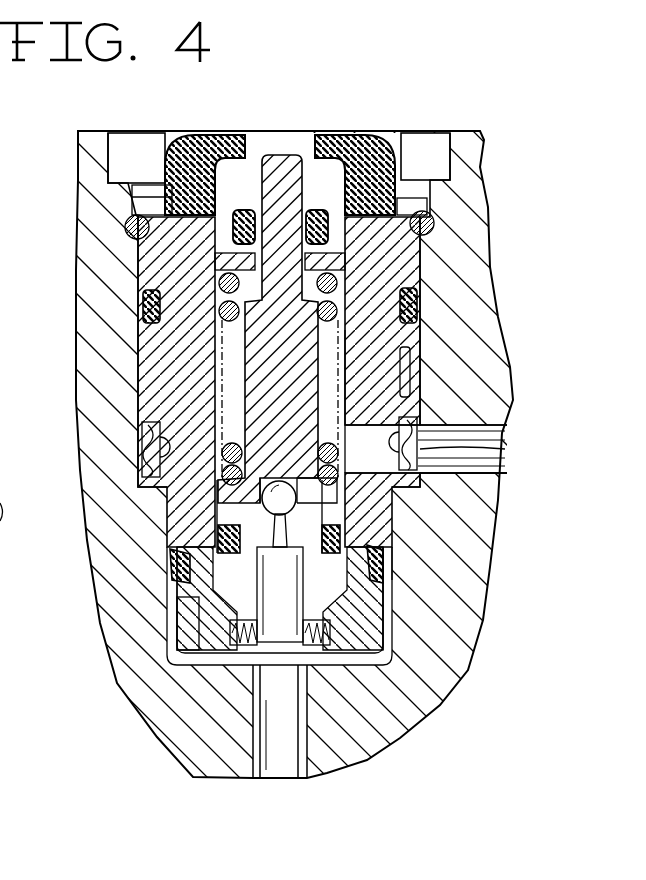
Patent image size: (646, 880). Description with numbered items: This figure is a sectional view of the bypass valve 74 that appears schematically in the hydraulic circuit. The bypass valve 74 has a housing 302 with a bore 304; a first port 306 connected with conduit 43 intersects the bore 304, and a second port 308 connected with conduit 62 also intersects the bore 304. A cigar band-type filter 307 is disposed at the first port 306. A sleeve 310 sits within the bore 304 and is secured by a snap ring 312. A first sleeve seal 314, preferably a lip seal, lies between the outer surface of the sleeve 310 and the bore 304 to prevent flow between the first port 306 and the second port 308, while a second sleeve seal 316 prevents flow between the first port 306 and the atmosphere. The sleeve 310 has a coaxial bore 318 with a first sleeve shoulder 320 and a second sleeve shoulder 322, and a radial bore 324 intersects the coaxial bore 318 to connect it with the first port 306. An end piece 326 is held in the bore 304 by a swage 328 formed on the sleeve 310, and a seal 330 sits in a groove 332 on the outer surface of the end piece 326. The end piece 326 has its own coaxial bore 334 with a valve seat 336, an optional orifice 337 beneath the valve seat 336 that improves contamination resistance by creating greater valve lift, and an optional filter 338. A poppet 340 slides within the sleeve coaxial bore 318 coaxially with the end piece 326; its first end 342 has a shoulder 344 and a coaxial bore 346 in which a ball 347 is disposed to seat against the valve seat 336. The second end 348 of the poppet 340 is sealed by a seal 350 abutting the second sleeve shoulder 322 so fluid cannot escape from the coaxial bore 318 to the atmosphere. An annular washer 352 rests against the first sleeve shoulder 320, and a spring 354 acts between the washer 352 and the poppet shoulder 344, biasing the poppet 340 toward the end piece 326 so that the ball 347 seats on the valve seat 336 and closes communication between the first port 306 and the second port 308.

The bypass valve 74 is at (166, 108).
The housing 302 is at (491, 218).
The bore 304 is at (420, 400).
The first port 306 is at (503, 465).
The cigar band-type filter 307 is at (503, 440).
The second port 308 is at (287, 768).
The sleeve 310 is at (143, 300).
The snap ring 312 is at (128, 220).
The first sleeve seal 314 is at (393, 573).
The second sleeve seal 316 is at (417, 305).
The coaxial bore 318 is at (220, 336).
The first sleeve shoulder 320 is at (138, 238).
The second sleeve shoulder 322 is at (247, 133).
The radial bore 324 is at (412, 388).
The end piece 326 is at (222, 640).
The swage 328 is at (247, 620).
The seal 330 is at (172, 558).
The groove 332 is at (188, 596).
The coaxial bore 334 is at (388, 603).
The valve seat 336 is at (278, 516).
The orifice 337 is at (372, 560).
The filter 338 is at (263, 637).
The poppet 340 is at (410, 296).
The first end 342 is at (160, 350).
The shoulder 344 is at (297, 525).
The coaxial bore 346 is at (266, 452).
The ball 347 is at (268, 492).
The second end 348 is at (328, 133).
The seal 350 is at (401, 133).
The annular washer 352 is at (345, 222).
The spring 354 is at (415, 345).
The conduit 43 is at (508, 430).
The conduit 62 is at (266, 770).